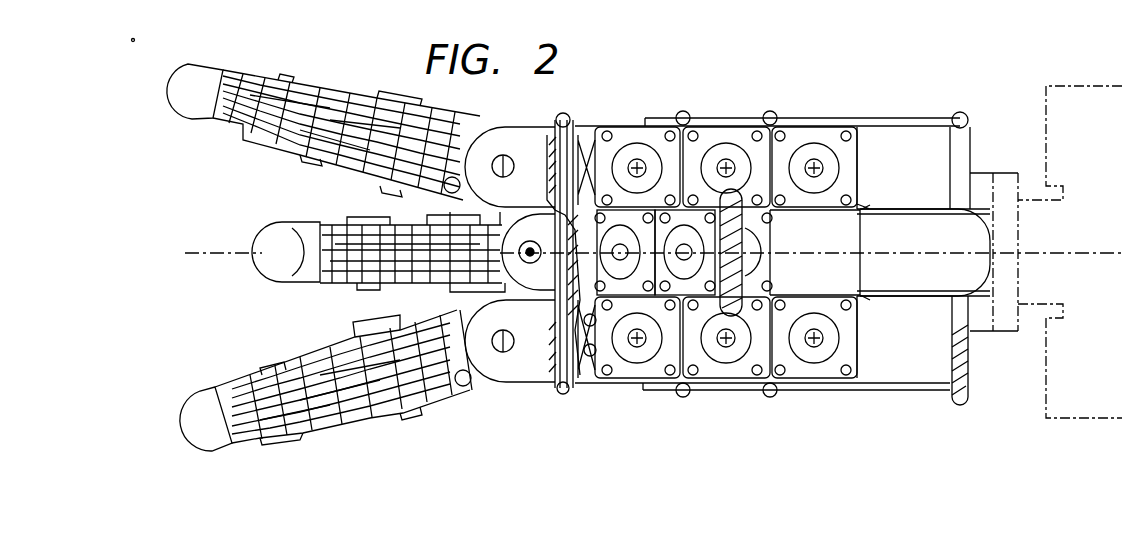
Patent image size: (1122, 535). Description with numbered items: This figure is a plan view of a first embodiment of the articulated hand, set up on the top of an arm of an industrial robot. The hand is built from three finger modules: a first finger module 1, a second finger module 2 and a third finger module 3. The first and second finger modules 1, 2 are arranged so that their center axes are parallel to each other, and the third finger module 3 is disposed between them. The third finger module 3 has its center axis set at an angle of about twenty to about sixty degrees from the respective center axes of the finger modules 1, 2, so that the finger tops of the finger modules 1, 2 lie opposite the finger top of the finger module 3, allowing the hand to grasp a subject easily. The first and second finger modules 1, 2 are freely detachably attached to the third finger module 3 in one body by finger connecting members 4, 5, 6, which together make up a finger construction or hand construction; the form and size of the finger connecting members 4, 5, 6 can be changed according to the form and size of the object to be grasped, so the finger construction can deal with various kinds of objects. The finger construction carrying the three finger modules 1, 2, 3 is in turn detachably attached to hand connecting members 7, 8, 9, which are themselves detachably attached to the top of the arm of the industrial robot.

The first finger module 1 is at (200, 449).
The second finger module 2 is at (187, 113).
The third finger module 3 is at (264, 272).
The finger connecting member 4 is at (745, 312).
The finger connecting member 5 is at (748, 195).
The finger connecting member 6 is at (620, 390).
The hand connecting member 7 is at (900, 392).
The hand connecting member 8 is at (906, 120).
The hand connecting member 9 is at (970, 145).